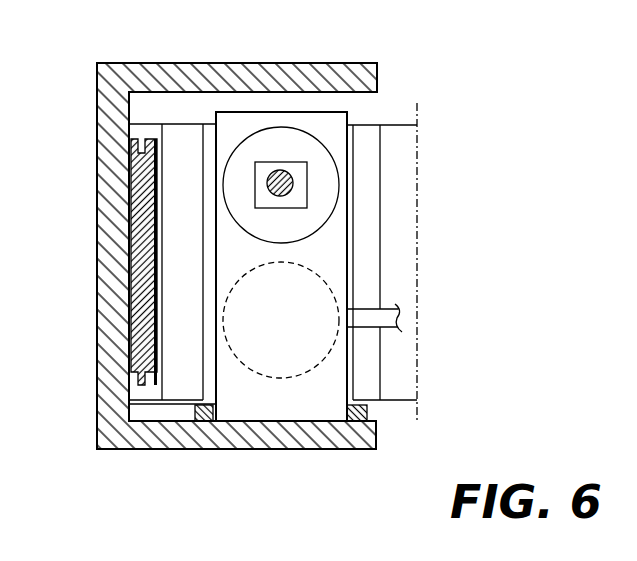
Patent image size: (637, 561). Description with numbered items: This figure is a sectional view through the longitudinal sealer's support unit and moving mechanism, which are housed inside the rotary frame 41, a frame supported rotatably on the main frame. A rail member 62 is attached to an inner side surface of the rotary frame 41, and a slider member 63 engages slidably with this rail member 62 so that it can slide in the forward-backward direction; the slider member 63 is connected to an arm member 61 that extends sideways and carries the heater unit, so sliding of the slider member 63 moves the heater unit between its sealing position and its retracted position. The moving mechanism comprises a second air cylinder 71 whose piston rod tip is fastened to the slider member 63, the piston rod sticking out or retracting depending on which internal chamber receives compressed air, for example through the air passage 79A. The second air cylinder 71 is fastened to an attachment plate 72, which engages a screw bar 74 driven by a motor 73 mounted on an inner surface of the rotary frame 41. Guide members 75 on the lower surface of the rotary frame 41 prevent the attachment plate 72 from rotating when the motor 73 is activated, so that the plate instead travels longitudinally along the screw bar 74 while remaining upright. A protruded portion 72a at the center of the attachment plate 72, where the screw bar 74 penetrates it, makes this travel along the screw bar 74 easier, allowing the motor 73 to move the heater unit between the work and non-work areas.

The rotary frame 41 is at (290, 77).
The arm member 61 is at (398, 147).
The rail member 62 is at (130, 258).
The slider member 63 is at (183, 133).
The second air cylinder 71 is at (295, 375).
The attachment plate 72 is at (267, 397).
The protruded portion 72a is at (297, 180).
The motor 73 is at (240, 227).
The screw bar 74 is at (288, 197).
The guide members 75 is at (205, 420).
The air passage 79A is at (370, 322).